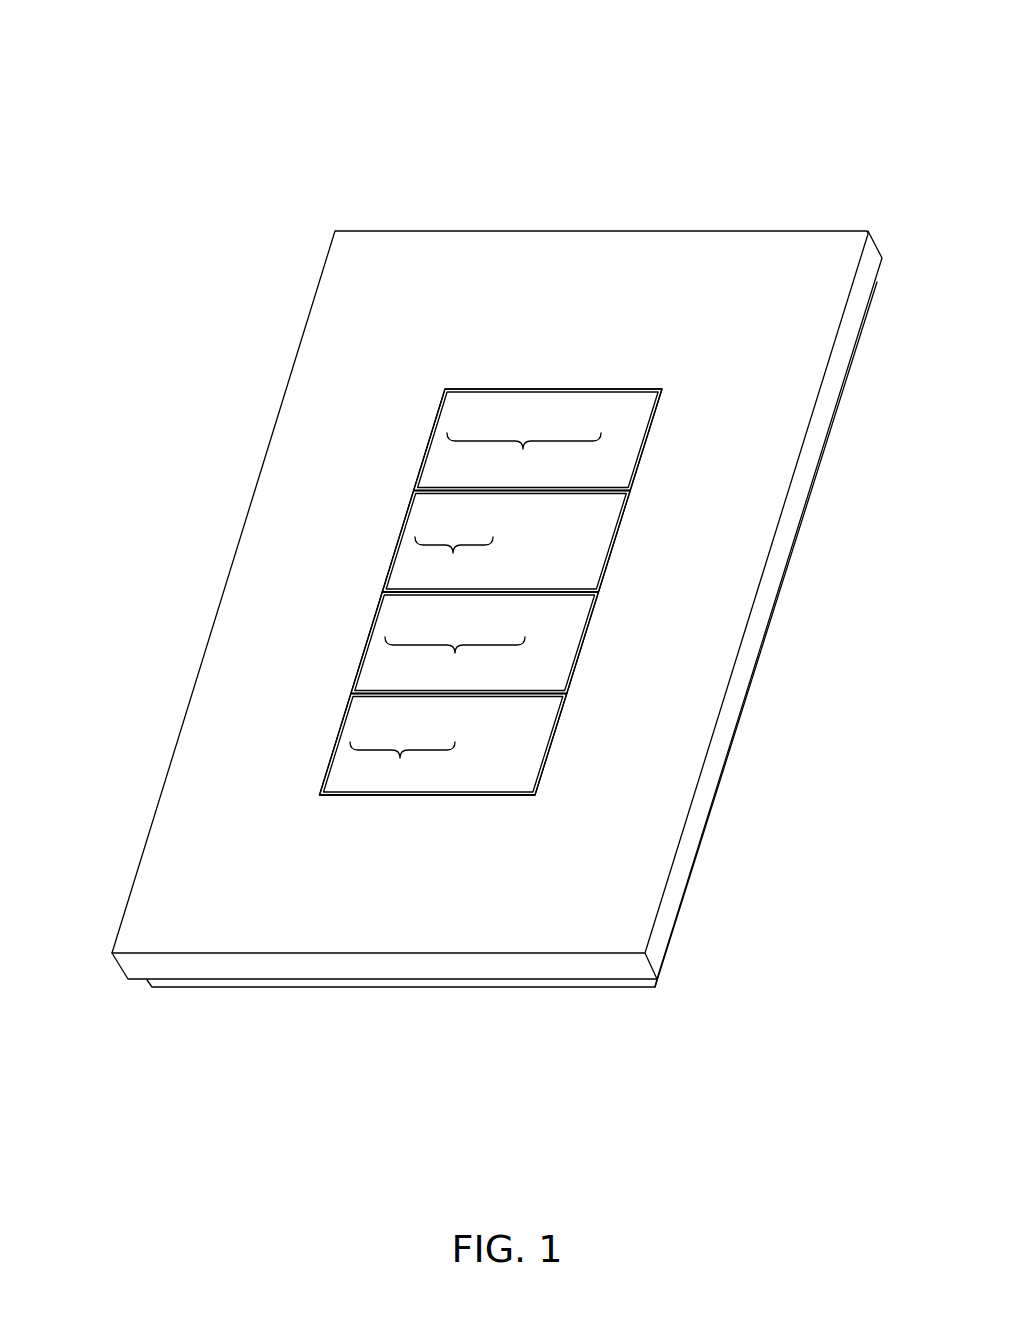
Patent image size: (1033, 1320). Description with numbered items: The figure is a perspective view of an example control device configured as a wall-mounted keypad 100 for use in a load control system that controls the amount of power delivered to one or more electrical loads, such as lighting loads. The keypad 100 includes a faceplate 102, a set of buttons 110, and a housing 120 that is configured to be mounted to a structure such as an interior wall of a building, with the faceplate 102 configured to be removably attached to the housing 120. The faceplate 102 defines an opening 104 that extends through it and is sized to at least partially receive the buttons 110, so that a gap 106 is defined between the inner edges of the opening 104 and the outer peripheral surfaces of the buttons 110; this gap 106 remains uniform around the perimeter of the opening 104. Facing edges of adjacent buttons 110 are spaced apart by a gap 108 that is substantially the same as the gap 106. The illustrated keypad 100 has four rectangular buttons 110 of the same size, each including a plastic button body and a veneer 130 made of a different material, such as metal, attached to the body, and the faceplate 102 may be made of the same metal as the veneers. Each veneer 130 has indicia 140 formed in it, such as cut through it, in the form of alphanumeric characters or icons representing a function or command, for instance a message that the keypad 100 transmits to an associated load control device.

The keypad 100 is at (108, 104).
The faceplate 102 is at (305, 325).
The opening 104 is at (652, 432).
The gap 106 is at (403, 795).
The gap 108 is at (500, 694).
The buttons 110 is at (602, 464).
The housing 120 is at (250, 987).
The veneer 130 is at (440, 441).
The indicia 140 is at (530, 448).